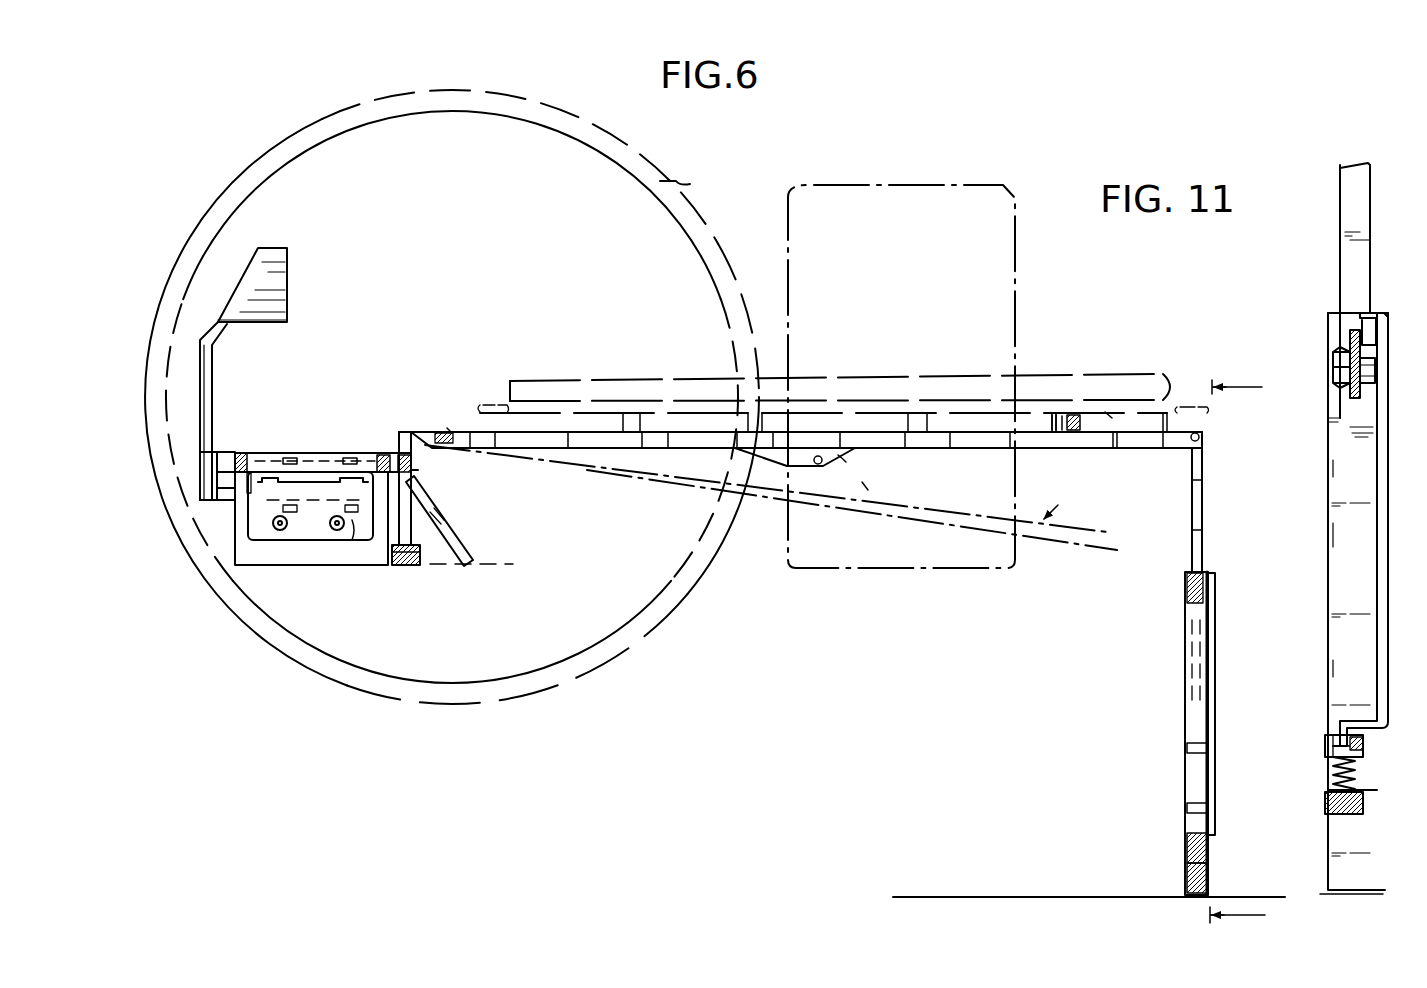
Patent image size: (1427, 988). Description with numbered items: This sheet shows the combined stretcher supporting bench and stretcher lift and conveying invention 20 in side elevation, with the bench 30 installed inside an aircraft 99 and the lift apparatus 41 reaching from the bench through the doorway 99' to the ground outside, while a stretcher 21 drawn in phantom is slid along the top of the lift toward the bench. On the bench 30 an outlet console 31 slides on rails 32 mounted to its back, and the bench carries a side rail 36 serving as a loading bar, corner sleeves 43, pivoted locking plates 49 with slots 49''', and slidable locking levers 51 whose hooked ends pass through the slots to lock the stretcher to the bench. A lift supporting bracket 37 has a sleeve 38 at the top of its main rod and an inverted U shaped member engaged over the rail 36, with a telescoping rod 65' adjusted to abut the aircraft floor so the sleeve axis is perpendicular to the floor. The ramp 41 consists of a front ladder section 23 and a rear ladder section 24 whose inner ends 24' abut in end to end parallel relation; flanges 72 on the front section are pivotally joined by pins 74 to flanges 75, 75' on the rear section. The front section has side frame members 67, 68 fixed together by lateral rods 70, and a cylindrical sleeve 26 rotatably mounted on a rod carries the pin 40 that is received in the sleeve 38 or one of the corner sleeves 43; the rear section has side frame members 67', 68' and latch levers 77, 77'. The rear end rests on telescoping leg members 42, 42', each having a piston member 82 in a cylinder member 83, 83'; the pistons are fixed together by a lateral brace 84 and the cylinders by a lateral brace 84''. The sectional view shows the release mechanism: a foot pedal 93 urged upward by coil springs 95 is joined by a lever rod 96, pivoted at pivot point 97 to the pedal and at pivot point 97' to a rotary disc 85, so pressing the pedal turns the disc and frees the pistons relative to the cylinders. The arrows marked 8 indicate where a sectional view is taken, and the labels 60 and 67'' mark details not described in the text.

In FIG. 6, the section line 8- 8 is at (1247, 652).
In FIG. 6, the combined stretcher supporting bench and stretcher lift and conveying invention 20 is at (1212, 505).
In FIG. 6, the stretcher 21 is at (1076, 371).
In FIG. 6, the front ladder section 23 is at (530, 448).
In FIG. 6, the rear ladder section 24 is at (800, 464).
In FIG. 6, the inner ends of the ladder sections 24' is at (895, 396).
In FIG. 6, the cylindrical sleeve 26 is at (450, 427).
In FIG. 6, the bench 30 is at (305, 450).
In FIG. 6, the outlet console 31 is at (220, 395).
In FIG. 6, the rail 32 is at (223, 454).
In FIG. 6, the rail 36 is at (412, 566).
In FIG. 6, the lift supporting bracket 37 is at (457, 522).
In FIG. 6, the sleeve 38 is at (418, 471).
In FIG. 6, the pin 40 is at (400, 454).
In FIG. 6, the lift apparatus 41 is at (652, 449).
In FIG. 6, the telescopic leg member 42 is at (1224, 733).
In FIG. 6, the telescoping leg member 42' is at (1240, 704).
In FIG. 11, the telescoping leg member 42' is at (1326, 363).
In FIG. 6, the sleeve 43 is at (246, 453).
In FIG. 6, the locking plate 49 is at (311, 540).
In FIG. 6, the slots 49''' is at (371, 561).
In FIG. 6, the slidable locking lever 51 is at (344, 455).
In FIG. 6, the hinge pin 60 is at (1200, 437).
In FIG. 6, the rod 65' is at (476, 547).
In FIG. 6, the side frame member 67 is at (603, 400).
In FIG. 6, the side frame member 67' is at (1113, 463).
In FIG. 6, the deck plank end 67'' is at (436, 409).
In FIG. 6, the side frame member 68 is at (1148, 463).
In FIG. 6, the side frame member 68' is at (1083, 543).
In FIG. 6, the lateral rods 70 is at (1045, 425).
In FIG. 6, the projecting flange 72 is at (803, 467).
In FIG. 6, the pins 74 is at (823, 463).
In FIG. 6, the flange 75 is at (852, 507).
In FIG. 6, the flange 75' is at (889, 521).
In FIG. 6, the latch lever 77 is at (1105, 387).
In FIG. 6, the latch lever 77' is at (1152, 382).
In FIG. 6, the piston member 82 is at (1190, 548).
In FIG. 6, the cylinder member 83 is at (1175, 745).
In FIG. 6, the cylinder member 83' is at (1175, 694).
In FIG. 6, the lateral brace member 84 is at (1089, 880).
In FIG. 11, the lateral brace 84'' is at (1332, 819).
In FIG. 11, the rotary disc 85 is at (1350, 338).
In FIG. 6, the foot pedal 93 is at (1187, 843).
In FIG. 11, the foot pedal 93 is at (1325, 721).
In FIG. 11, the coil spring 95 is at (1325, 759).
In FIG. 6, the lever rod 96 is at (1214, 656).
In FIG. 11, the lever rod 96 is at (1367, 546).
In FIG. 11, the pivot point 97 is at (1329, 725).
In FIG. 11, the pivot point 97' is at (1323, 496).
In FIG. 6, the aircraft 99 is at (453, 397).
In FIG. 6, the doorway 99' is at (715, 174).